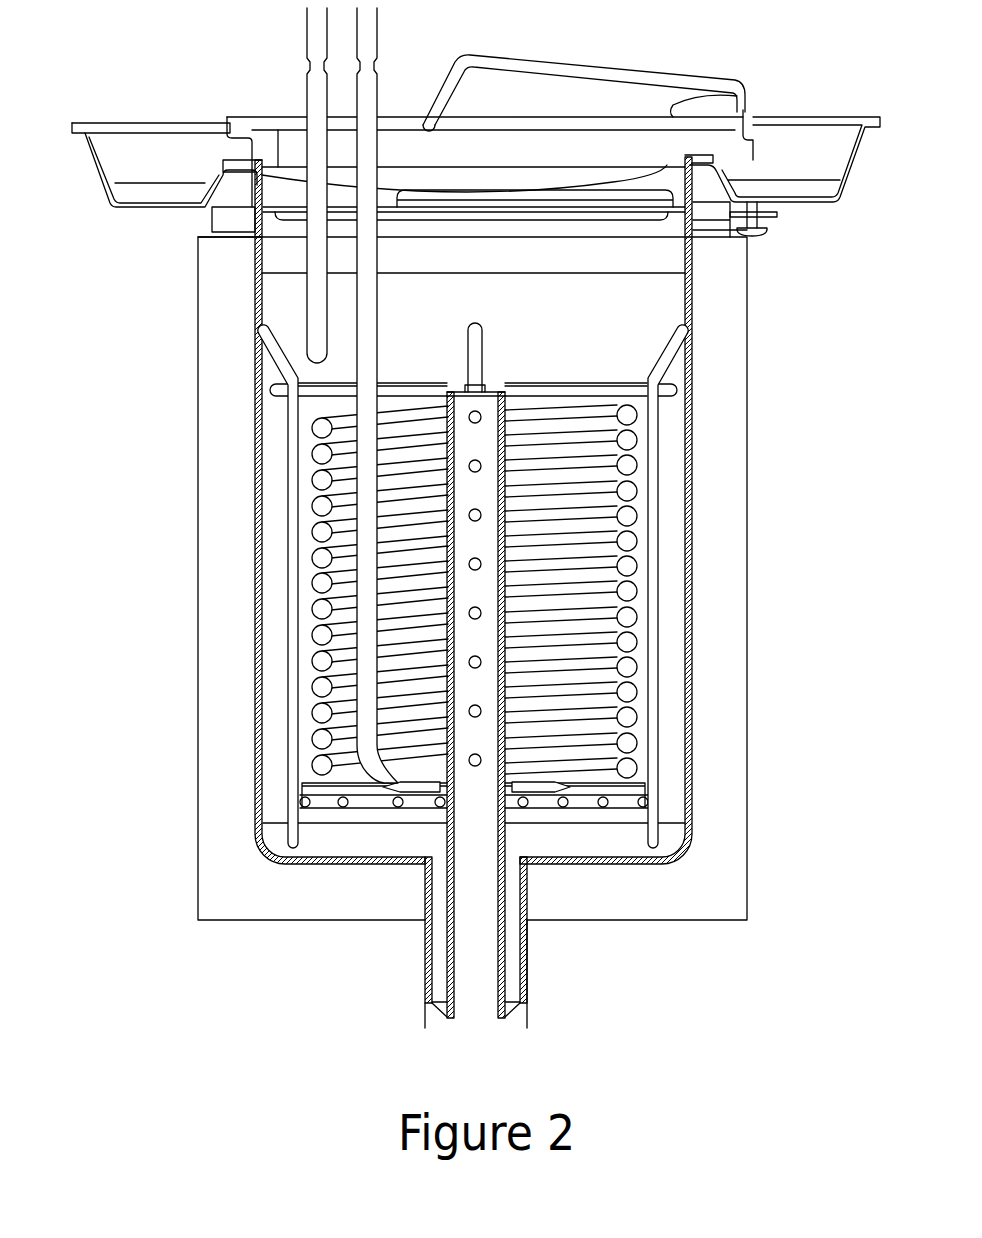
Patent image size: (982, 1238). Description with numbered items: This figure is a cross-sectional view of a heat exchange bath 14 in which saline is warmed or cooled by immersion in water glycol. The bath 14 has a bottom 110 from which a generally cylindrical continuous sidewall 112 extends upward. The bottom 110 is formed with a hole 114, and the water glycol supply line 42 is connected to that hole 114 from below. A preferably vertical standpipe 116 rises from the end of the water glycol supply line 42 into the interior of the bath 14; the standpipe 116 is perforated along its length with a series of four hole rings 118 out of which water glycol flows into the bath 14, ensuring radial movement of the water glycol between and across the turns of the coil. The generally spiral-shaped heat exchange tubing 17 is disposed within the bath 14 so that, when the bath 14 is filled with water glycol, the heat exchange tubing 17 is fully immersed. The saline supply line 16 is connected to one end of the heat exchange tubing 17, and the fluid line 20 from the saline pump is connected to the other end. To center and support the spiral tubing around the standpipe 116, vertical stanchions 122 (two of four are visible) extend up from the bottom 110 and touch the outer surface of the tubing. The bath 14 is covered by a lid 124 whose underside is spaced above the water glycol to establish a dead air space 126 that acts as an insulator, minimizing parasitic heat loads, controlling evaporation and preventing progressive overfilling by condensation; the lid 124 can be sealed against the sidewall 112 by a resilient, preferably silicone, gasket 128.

The heat exchange bath 14 is at (810, 309).
The saline supply line 16 is at (378, 23).
The heat exchange tubing 17 is at (630, 517).
The fluid line 20 is at (307, 20).
The water glycol supply line 42 is at (527, 963).
The bottom 110 is at (640, 862).
The sidewall 112 is at (695, 722).
The hole 114 is at (445, 858).
The standpipe 116 is at (505, 858).
The hole rings 118 is at (450, 661).
The vertical stanchions 122 is at (277, 419).
The lid 124 is at (685, 128).
The dead air space 126 is at (277, 247).
The gasket 128 is at (692, 255).